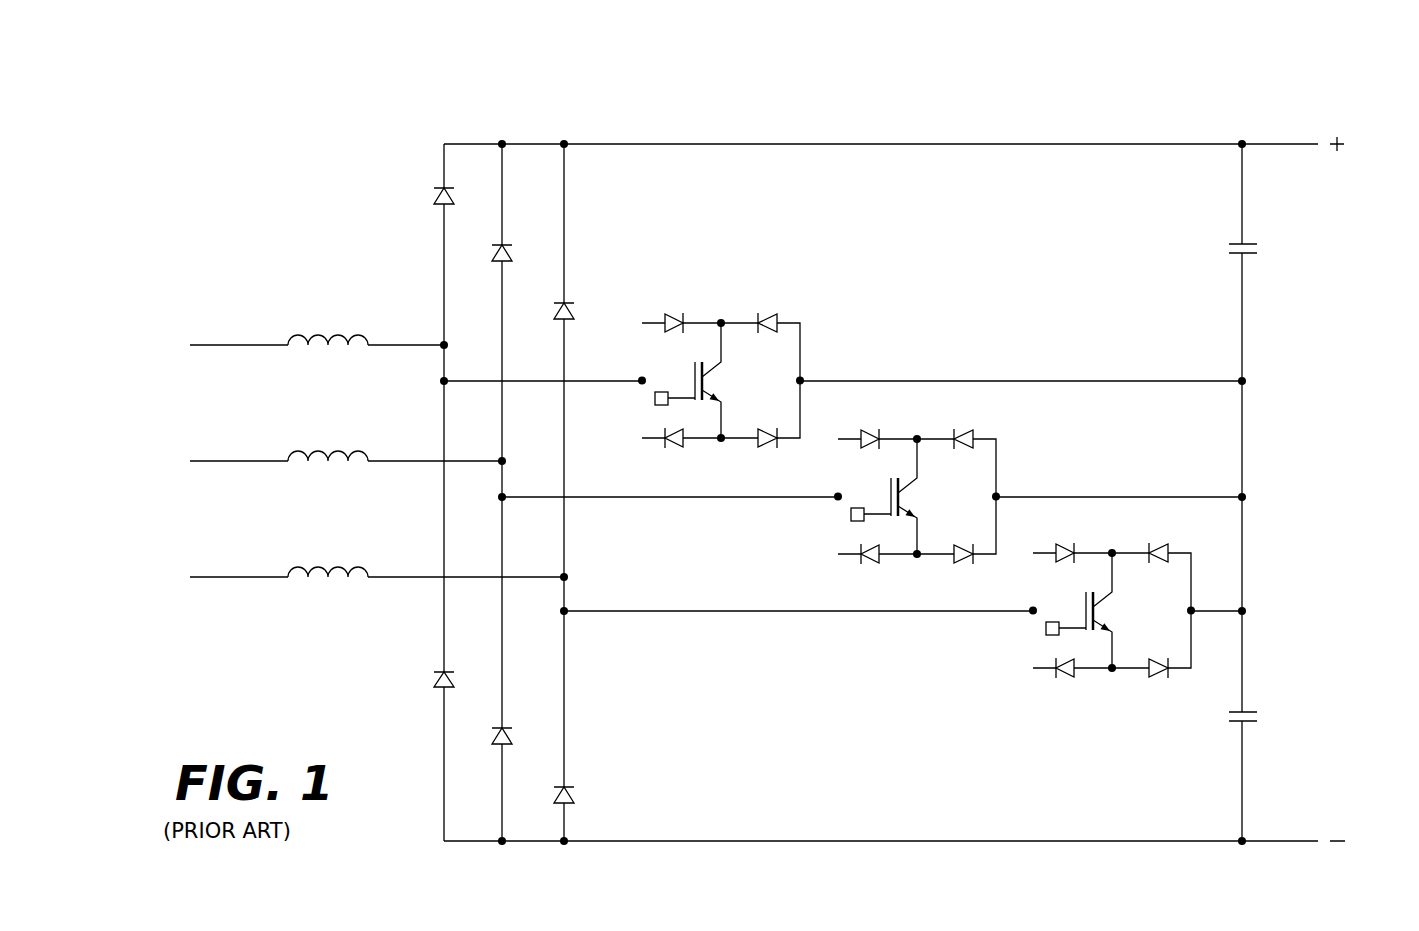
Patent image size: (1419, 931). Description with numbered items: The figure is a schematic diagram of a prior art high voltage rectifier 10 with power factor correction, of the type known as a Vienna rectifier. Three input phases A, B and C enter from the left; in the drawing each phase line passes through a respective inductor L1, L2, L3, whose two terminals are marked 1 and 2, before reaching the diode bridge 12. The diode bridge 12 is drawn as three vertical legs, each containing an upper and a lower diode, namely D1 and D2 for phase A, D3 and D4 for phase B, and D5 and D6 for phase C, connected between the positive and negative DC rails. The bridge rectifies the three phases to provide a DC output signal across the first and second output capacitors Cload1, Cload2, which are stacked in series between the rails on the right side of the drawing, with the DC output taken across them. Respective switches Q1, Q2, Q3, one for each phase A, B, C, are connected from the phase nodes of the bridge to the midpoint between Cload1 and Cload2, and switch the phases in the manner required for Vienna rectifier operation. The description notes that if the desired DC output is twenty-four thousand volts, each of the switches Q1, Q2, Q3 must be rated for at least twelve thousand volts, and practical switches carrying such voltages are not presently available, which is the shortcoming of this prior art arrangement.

The high voltage rectifier 10 is at (996, 107).
The diode bridge 12 is at (489, 492).
The inductor input terminal 1 is at (239, 447).
The inductor output terminal 2 is at (466, 447).
The diode D1 is at (429, 244).
The diode D2 is at (430, 593).
The diode D3 is at (488, 302).
The diode D4 is at (489, 651).
The diode D5 is at (550, 360).
The diode D6 is at (551, 709).
The phase A inductor L1 is at (328, 325).
The phase B inductor L2 is at (328, 441).
The phase C inductor L3 is at (328, 558).
The switch Q1 is at (721, 380).
The switch Q2 is at (917, 496).
The switch Q3 is at (1112, 610).
The first output capacitor Cload1 is at (1285, 262).
The second output capacitor Cload2 is at (1287, 611).